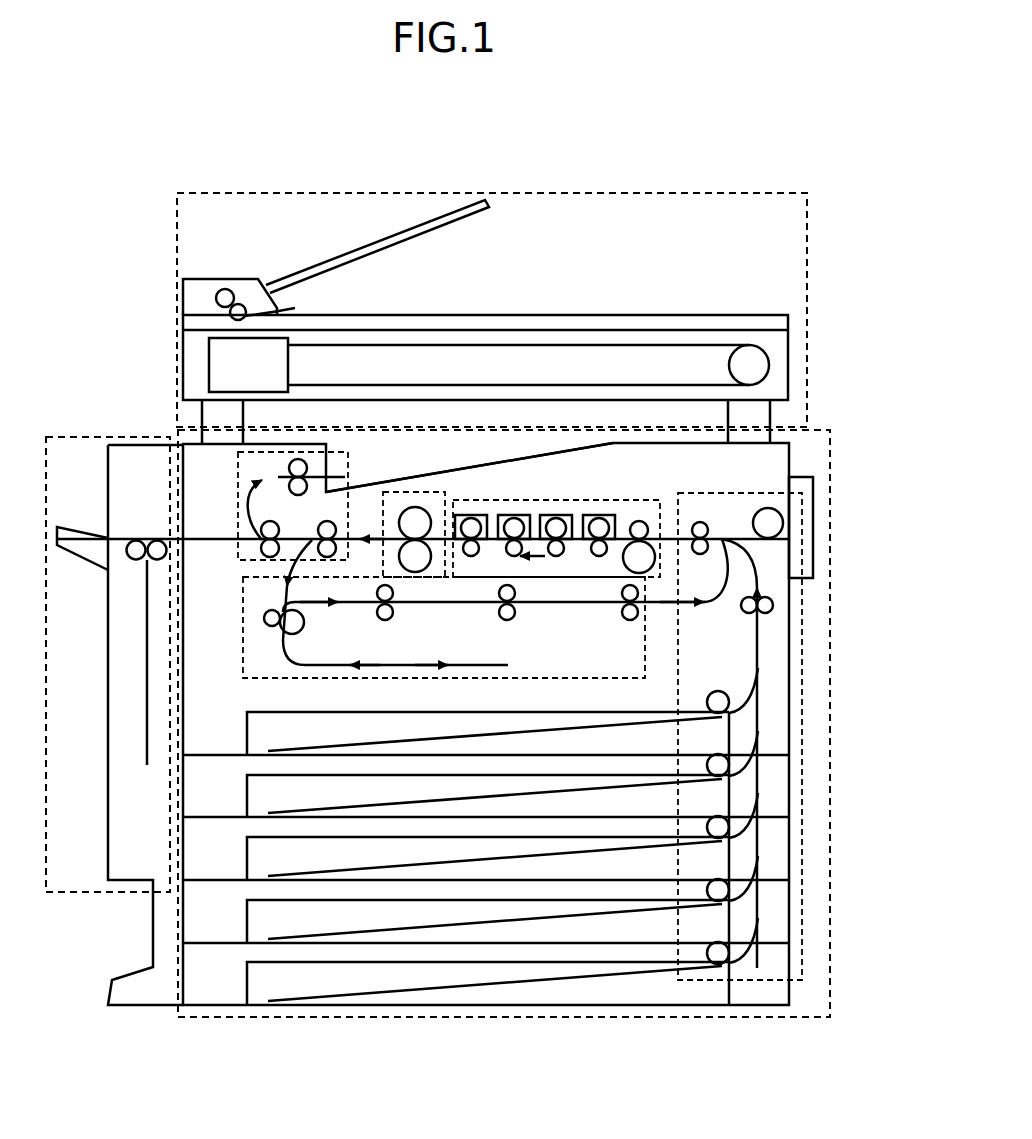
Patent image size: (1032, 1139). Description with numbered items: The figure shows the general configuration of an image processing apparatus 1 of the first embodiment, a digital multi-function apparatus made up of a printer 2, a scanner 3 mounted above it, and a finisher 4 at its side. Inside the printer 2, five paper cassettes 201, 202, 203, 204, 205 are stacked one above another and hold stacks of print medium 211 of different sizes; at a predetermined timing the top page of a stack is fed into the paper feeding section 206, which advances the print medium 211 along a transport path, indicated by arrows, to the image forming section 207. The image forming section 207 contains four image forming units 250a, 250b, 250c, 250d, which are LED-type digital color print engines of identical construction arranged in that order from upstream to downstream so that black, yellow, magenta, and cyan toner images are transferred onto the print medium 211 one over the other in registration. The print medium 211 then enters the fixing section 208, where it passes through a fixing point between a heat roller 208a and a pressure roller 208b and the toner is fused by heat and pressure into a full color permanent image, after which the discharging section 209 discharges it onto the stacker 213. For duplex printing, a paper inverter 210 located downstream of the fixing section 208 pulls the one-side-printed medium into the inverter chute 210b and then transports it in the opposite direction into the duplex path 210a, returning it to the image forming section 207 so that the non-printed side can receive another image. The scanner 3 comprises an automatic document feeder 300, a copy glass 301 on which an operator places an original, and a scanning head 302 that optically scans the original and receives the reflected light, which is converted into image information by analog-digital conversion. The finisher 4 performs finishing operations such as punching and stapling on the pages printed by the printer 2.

The image processing apparatus 1 is at (690, 135).
The printer 2 is at (490, 1017).
The scanner 3 is at (233, 193).
The finisher 4 is at (76, 437).
The automatic document feeder 300 is at (212, 279).
The copy glass 301 is at (626, 330).
The scanning head 302 is at (209, 362).
The paper cassette 201 is at (246, 742).
The paper cassette 202 is at (246, 805).
The paper cassette 203 is at (246, 867).
The paper cassette 204 is at (246, 930).
The paper cassette 205 is at (246, 992).
The paper feeding section 206 is at (802, 937).
The image forming section 207 is at (678, 493).
The fixing section 208 is at (405, 580).
The heat roller 208a is at (415, 520).
The pressure roller 208b is at (422, 560).
The discharging section 209 is at (240, 508).
The paper inverter 210 is at (243, 650).
The duplex path 210a is at (563, 604).
The inverter chute 210b is at (362, 664).
The print medium 211 is at (418, 990).
The stacker 213 is at (373, 484).
The image forming unit 250a is at (633, 480).
The image forming unit 250b is at (557, 501).
The image forming unit 250c is at (503, 501).
The image forming unit 250d is at (467, 500).